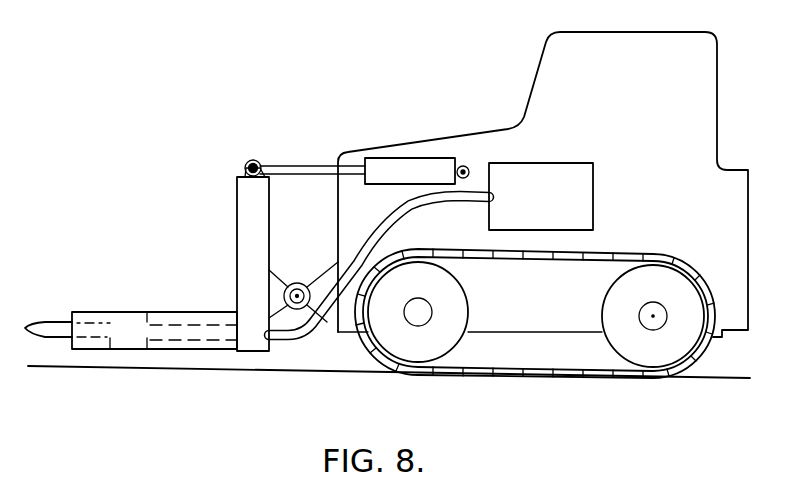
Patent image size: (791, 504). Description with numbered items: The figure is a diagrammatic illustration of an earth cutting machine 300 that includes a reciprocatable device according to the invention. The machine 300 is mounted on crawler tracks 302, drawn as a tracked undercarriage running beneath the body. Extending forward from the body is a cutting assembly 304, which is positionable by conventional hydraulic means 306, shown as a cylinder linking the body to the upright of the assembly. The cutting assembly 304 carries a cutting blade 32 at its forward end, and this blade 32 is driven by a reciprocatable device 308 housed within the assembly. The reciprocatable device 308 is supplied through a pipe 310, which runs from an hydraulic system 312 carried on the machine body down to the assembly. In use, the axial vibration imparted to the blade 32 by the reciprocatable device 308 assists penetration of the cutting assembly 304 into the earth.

The cutting blade 32 is at (52, 320).
The earth cutting machine 300 is at (455, 131).
The crawler tracks 302 is at (592, 258).
The cutting assembly 304 is at (208, 312).
The hydraulic means 306 is at (393, 166).
The reciprocatable device 308 is at (107, 320).
The pipe 310 is at (438, 201).
The hydraulic system 312 is at (525, 175).